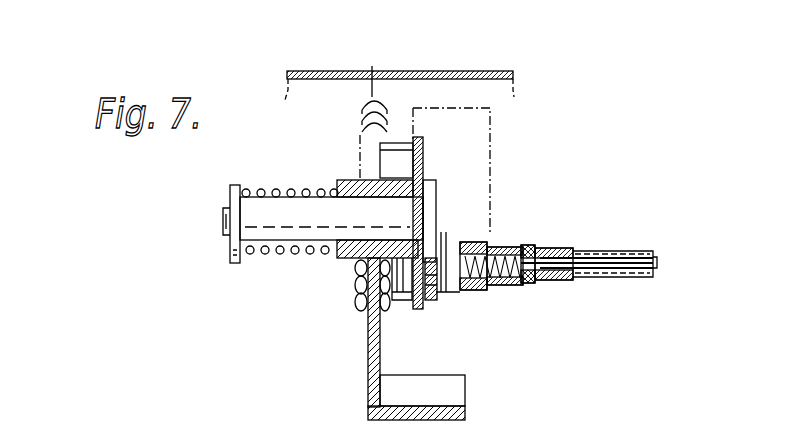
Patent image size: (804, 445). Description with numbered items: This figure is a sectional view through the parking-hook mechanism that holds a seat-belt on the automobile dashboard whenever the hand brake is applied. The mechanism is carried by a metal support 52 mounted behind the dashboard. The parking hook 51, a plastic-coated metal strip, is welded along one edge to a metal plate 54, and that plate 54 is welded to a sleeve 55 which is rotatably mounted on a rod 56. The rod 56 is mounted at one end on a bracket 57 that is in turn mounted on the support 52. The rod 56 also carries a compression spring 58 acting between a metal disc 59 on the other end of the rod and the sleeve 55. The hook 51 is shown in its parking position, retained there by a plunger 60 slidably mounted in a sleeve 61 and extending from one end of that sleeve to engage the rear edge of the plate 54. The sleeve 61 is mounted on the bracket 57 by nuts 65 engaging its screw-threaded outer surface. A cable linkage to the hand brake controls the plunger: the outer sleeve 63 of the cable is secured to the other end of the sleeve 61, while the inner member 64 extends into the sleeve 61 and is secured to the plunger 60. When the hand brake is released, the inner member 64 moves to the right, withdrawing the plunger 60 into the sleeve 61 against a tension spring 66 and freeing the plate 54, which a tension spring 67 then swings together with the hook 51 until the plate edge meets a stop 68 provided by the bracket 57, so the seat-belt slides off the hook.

The parking hook 51 is at (445, 392).
The metal support 52 is at (484, 71).
The metal plate 54 is at (373, 388).
The sleeve 55 is at (348, 181).
The rod 56 is at (290, 238).
The bracket 57 is at (495, 130).
The compression spring 58 is at (275, 158).
The metal disc 59 is at (231, 194).
The plunger 60 is at (479, 240).
The sleeve 61 is at (463, 297).
The outer sleeve of the cable 63 is at (613, 252).
The inner member of the cable 64 is at (657, 268).
The nuts 65 is at (432, 302).
The tension spring 66 is at (507, 252).
The tension spring 67 is at (362, 117).
The stop 68 is at (398, 166).